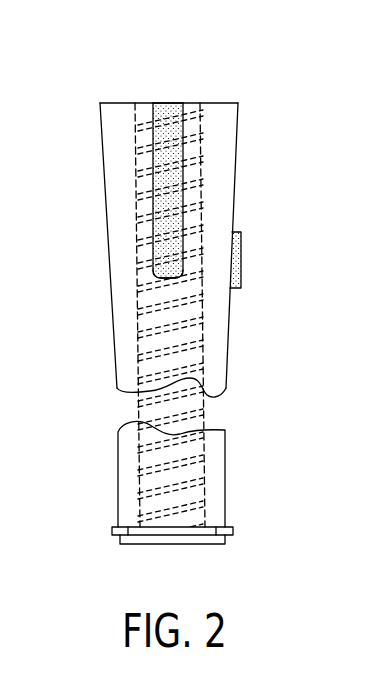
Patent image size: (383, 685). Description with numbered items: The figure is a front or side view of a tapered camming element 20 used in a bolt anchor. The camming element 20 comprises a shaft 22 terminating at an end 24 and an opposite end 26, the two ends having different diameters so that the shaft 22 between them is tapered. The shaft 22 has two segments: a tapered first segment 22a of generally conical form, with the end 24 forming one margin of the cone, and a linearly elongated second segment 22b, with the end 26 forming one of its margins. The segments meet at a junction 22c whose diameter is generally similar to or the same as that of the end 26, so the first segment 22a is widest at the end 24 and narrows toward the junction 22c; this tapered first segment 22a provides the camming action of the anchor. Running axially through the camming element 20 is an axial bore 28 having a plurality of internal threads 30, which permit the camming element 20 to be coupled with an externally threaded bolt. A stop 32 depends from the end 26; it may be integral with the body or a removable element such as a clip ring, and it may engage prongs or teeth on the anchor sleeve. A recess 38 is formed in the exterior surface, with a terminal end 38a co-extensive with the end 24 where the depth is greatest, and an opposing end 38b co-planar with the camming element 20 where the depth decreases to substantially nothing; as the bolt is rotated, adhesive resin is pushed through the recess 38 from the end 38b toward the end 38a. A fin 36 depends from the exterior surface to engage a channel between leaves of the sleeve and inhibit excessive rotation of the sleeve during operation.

The camming element 20 is at (34, 107).
The shaft 22 is at (94, 368).
The tapered first segment 22a is at (122, 232).
The linearly elongated second segment 22b is at (128, 462).
The junction 22c is at (226, 341).
The end 24 is at (120, 103).
The end 26 is at (208, 545).
The axial bore 28 is at (136, 198).
The internal threads 30 is at (228, 320).
The stop 32 is at (112, 530).
The fin 36 is at (241, 258).
The recess 38 is at (178, 150).
The terminal end of recess 38a is at (168, 103).
The opposing end of recess 38b is at (160, 284).